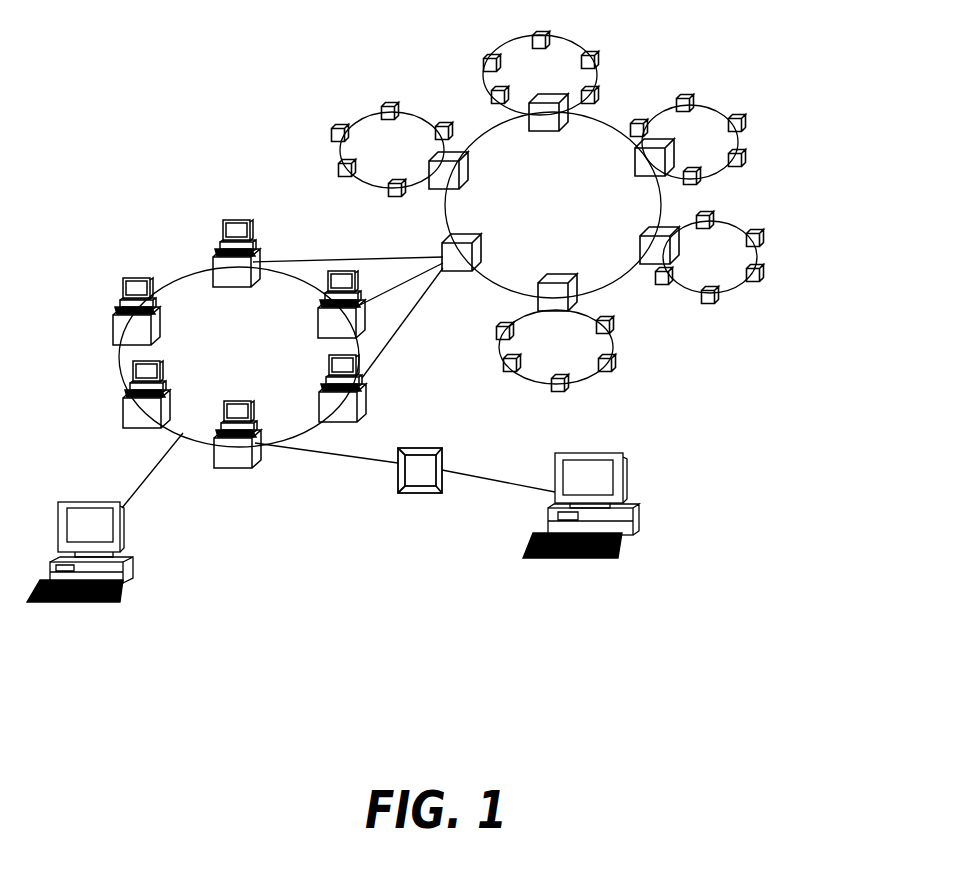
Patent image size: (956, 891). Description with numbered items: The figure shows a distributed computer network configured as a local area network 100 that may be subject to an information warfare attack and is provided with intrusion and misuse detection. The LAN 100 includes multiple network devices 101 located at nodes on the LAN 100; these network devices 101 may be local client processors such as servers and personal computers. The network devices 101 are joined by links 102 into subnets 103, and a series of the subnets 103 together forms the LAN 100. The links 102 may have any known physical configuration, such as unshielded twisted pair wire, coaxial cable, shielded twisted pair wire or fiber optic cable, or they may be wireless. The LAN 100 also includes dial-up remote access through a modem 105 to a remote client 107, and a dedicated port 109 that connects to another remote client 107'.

The local area network 100 is at (752, 659).
The network devices 101 is at (740, 122).
The links 102 is at (568, 50).
The subnets 103 is at (527, 70).
The modem 105 is at (443, 450).
The remote client 107 is at (623, 505).
The remote client 107' is at (112, 573).
The dedicated port 109 is at (166, 456).